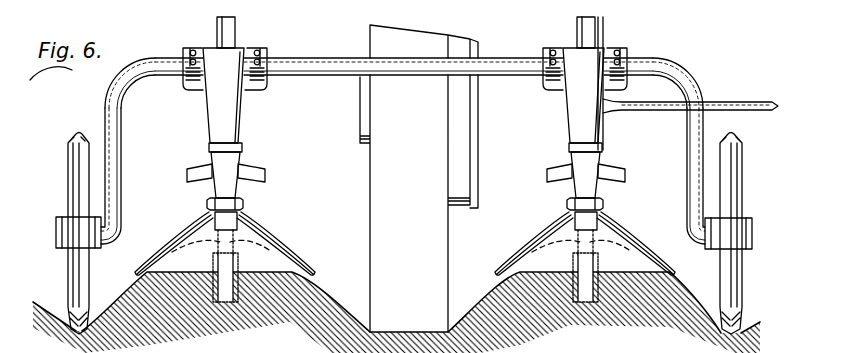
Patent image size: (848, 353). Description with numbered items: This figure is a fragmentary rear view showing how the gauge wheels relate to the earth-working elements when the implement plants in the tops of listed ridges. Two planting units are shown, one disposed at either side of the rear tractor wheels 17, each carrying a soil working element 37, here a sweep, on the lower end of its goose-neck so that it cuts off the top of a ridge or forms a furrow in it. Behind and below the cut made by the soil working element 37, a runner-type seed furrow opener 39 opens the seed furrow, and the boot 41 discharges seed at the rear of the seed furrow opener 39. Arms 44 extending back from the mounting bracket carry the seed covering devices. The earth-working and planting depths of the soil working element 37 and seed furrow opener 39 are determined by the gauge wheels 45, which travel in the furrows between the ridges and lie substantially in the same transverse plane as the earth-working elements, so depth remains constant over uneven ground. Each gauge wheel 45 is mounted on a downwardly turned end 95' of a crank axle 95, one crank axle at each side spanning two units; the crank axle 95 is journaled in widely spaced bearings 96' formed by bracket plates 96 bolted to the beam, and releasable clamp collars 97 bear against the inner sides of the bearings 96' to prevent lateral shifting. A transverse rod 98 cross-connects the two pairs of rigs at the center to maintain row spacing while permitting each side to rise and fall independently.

The rear tractor wheels 17 is at (377, 192).
The soil working element 37 is at (253, 227).
The seed furrow opener 39 is at (213, 263).
The boot 41 is at (212, 122).
The arms 44 is at (195, 168).
The gauge wheels 45 is at (78, 133).
The crank axle 95 is at (404, 84).
The downwardly turned ends 95' is at (403, 176).
The bracket plates 96 is at (404, 78).
The bearings 96' is at (425, 59).
The clamp collars 97 is at (200, 45).
The transverse rod 98 is at (757, 102).